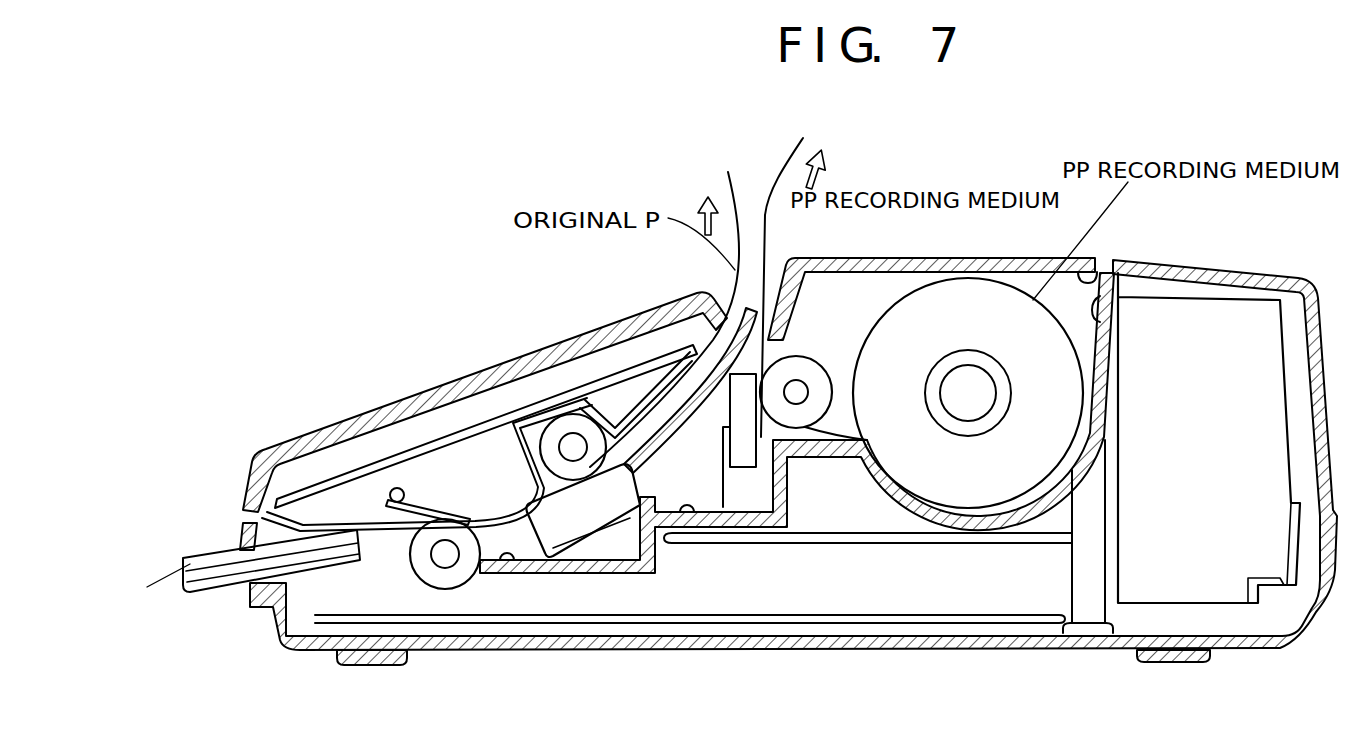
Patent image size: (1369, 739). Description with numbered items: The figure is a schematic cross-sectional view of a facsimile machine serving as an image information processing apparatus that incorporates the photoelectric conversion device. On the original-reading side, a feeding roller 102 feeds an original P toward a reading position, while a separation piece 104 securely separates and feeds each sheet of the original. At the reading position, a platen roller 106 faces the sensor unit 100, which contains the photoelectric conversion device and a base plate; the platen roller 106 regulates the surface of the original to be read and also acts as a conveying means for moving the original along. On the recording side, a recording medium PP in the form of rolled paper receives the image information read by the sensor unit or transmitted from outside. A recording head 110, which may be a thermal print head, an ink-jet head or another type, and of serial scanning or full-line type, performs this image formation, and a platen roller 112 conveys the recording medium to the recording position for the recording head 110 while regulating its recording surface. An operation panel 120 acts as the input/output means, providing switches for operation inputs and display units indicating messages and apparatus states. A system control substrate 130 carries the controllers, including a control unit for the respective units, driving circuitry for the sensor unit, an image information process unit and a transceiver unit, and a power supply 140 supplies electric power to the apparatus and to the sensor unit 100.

The sensor unit 100 is at (548, 532).
The feeding roller 102 is at (448, 590).
The separation piece 104 is at (420, 520).
The platen roller 106 is at (547, 423).
The recording head 110 is at (742, 449).
The platen roller 112 is at (797, 348).
The operation panel 120 is at (407, 398).
The system control substrate 130 is at (966, 624).
The power supply 140 is at (1205, 325).